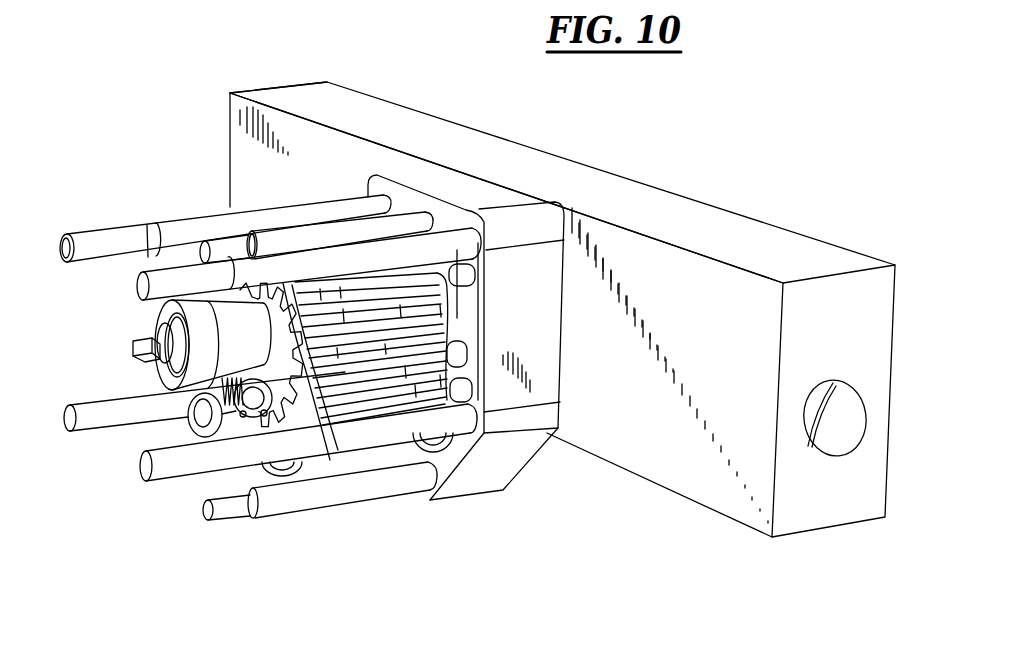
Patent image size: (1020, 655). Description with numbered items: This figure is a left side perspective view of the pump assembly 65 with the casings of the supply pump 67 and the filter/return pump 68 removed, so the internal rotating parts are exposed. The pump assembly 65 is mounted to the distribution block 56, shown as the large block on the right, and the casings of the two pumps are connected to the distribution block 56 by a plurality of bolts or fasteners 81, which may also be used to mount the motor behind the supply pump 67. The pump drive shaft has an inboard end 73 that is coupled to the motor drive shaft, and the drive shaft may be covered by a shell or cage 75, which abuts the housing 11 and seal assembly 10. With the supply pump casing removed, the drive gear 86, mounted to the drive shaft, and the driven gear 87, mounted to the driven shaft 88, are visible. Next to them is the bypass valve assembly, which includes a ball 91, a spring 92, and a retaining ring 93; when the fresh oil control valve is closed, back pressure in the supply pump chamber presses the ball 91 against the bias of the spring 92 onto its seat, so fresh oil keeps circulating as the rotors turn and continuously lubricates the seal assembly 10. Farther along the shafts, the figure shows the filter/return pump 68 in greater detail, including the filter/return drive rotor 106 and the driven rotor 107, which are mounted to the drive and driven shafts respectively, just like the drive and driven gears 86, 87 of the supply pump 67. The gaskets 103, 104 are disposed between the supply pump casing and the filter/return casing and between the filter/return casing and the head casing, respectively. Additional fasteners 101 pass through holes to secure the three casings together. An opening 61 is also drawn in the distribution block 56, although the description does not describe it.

The seal assembly 10 is at (140, 307).
The housing 11 is at (160, 321).
The distribution block 56 is at (800, 226).
The aperture 61 is at (840, 442).
The pump assembly 65 is at (736, 138).
The supply pump 67 is at (220, 323).
The filter/return pump 68 is at (290, 190).
The inboard end 73 is at (133, 352).
The cage 75 is at (232, 325).
The fasteners 81 is at (247, 220).
The drive gear 86 is at (328, 428).
The driven gear 87 is at (283, 478).
The driven shaft 88 is at (197, 464).
The ball 91 is at (220, 384).
The spring 92 is at (200, 424).
The retaining ring 93 is at (247, 418).
The fasteners 101 is at (354, 230).
The gasket 103 is at (428, 343).
The gasket 104 is at (473, 390).
The filter/return drive rotor 106 is at (404, 287).
The driven rotor 107 is at (410, 450).